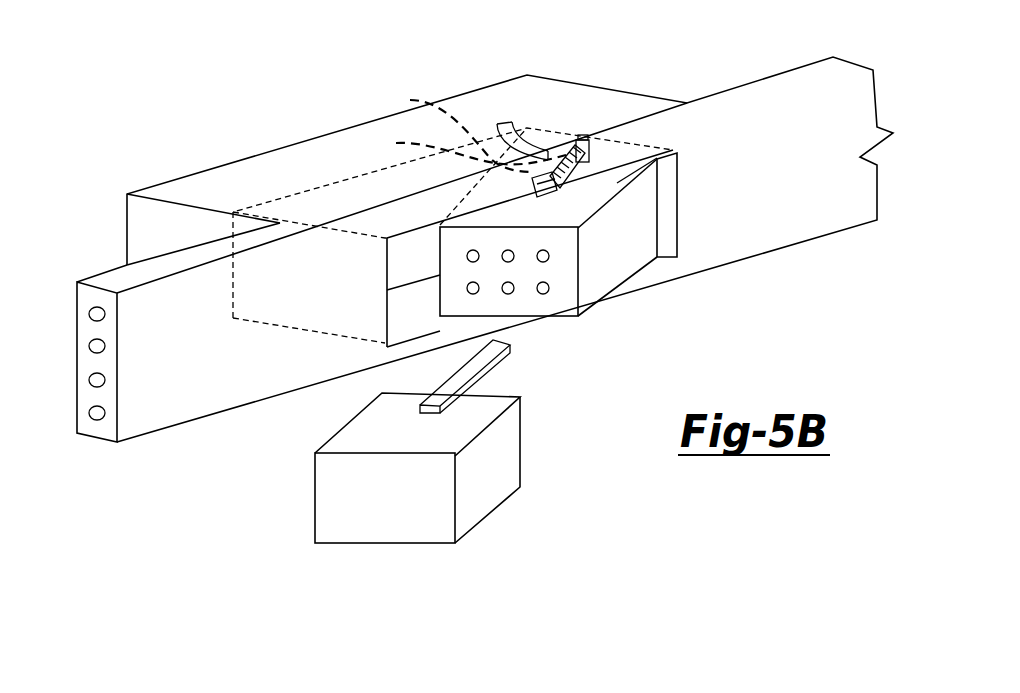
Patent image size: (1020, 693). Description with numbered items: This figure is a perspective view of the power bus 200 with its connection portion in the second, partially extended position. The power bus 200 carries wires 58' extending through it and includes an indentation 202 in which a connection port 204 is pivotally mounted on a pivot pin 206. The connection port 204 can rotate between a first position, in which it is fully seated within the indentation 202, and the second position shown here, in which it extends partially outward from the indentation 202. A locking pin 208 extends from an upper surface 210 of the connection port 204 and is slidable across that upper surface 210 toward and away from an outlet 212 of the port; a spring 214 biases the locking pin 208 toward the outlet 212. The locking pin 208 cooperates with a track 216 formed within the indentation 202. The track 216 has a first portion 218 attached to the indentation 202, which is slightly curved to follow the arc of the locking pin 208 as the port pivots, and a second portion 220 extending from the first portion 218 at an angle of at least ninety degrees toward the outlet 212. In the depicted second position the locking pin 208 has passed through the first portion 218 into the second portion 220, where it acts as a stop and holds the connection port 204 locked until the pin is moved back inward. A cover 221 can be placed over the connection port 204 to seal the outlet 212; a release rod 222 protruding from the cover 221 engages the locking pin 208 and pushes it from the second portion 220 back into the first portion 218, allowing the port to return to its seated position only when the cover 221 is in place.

The power bus 200 is at (234, 424).
The wires 58' is at (78, 382).
The indentation 202 is at (310, 205).
The connection port 204 is at (652, 297).
The pivot pin 206 is at (580, 137).
The locking pin 208 is at (548, 193).
The upper surface 210 is at (617, 183).
The outlet 212 is at (560, 265).
The spring 214 is at (576, 165).
The track 216 is at (510, 110).
The first portion 218 is at (452, 131).
The second portion 220 is at (462, 147).
The cover 221 is at (500, 485).
The release rod 222 is at (500, 355).